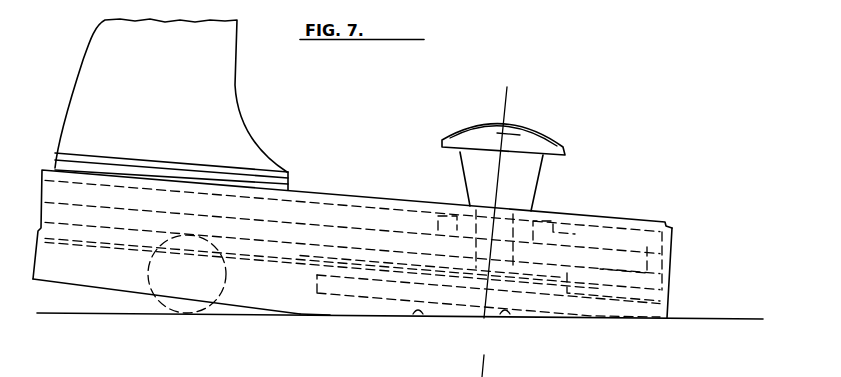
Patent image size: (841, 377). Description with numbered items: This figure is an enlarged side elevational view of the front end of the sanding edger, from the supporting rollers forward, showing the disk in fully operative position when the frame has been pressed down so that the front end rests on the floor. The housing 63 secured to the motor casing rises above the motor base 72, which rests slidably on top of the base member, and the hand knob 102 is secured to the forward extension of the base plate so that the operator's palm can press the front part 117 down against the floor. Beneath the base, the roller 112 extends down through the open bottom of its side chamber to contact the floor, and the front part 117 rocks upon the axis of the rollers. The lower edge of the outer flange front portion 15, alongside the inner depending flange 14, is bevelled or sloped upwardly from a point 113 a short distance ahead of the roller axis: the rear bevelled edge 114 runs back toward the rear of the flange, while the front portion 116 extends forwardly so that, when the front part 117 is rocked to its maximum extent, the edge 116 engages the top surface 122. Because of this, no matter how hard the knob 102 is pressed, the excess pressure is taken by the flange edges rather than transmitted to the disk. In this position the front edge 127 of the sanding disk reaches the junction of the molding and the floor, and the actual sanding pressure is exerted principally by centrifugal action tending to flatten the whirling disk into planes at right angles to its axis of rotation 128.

The inner depending flange 14 is at (467, 105).
The front portion of outer flange 15 is at (453, 313).
The housing 63 is at (236, 61).
The motor base 72 is at (290, 186).
The hand knob 102 is at (525, 135).
The roller 112 is at (190, 308).
The bevel starting point 113 is at (307, 318).
The rear bevelled edge 114 is at (125, 292).
The front portion of flange edge 116 is at (423, 314).
The front part 117 is at (575, 215).
The top surface 122 is at (503, 316).
The front edge of sanding disk 127 is at (668, 311).
The axis of rotation of the disk 128 is at (484, 318).